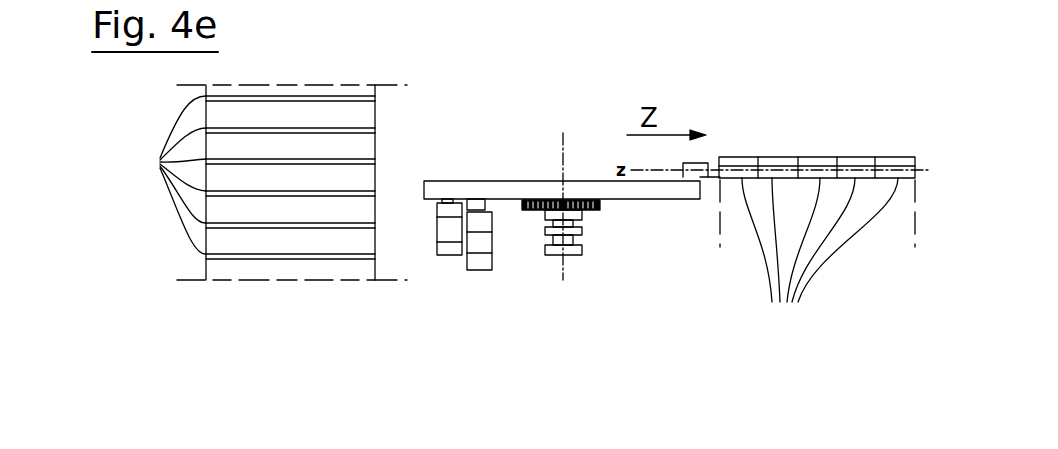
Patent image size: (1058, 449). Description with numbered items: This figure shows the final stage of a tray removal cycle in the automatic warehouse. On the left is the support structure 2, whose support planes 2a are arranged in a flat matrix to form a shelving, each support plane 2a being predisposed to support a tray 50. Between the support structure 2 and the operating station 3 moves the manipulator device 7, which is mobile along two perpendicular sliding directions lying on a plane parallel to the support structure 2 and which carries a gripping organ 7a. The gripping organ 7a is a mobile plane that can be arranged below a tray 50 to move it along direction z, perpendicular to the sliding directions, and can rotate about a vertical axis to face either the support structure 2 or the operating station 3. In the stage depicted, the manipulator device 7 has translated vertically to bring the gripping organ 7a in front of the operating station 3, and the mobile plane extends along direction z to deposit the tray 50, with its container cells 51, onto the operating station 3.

The support structure 2 is at (428, 72).
The support planes 2a is at (168, 175).
The manipulator device 7 is at (522, 140).
The gripping organ 7a is at (707, 171).
The tray 50 is at (858, 138).
The container cell 51 is at (820, 256).
The operating station 3 is at (903, 240).